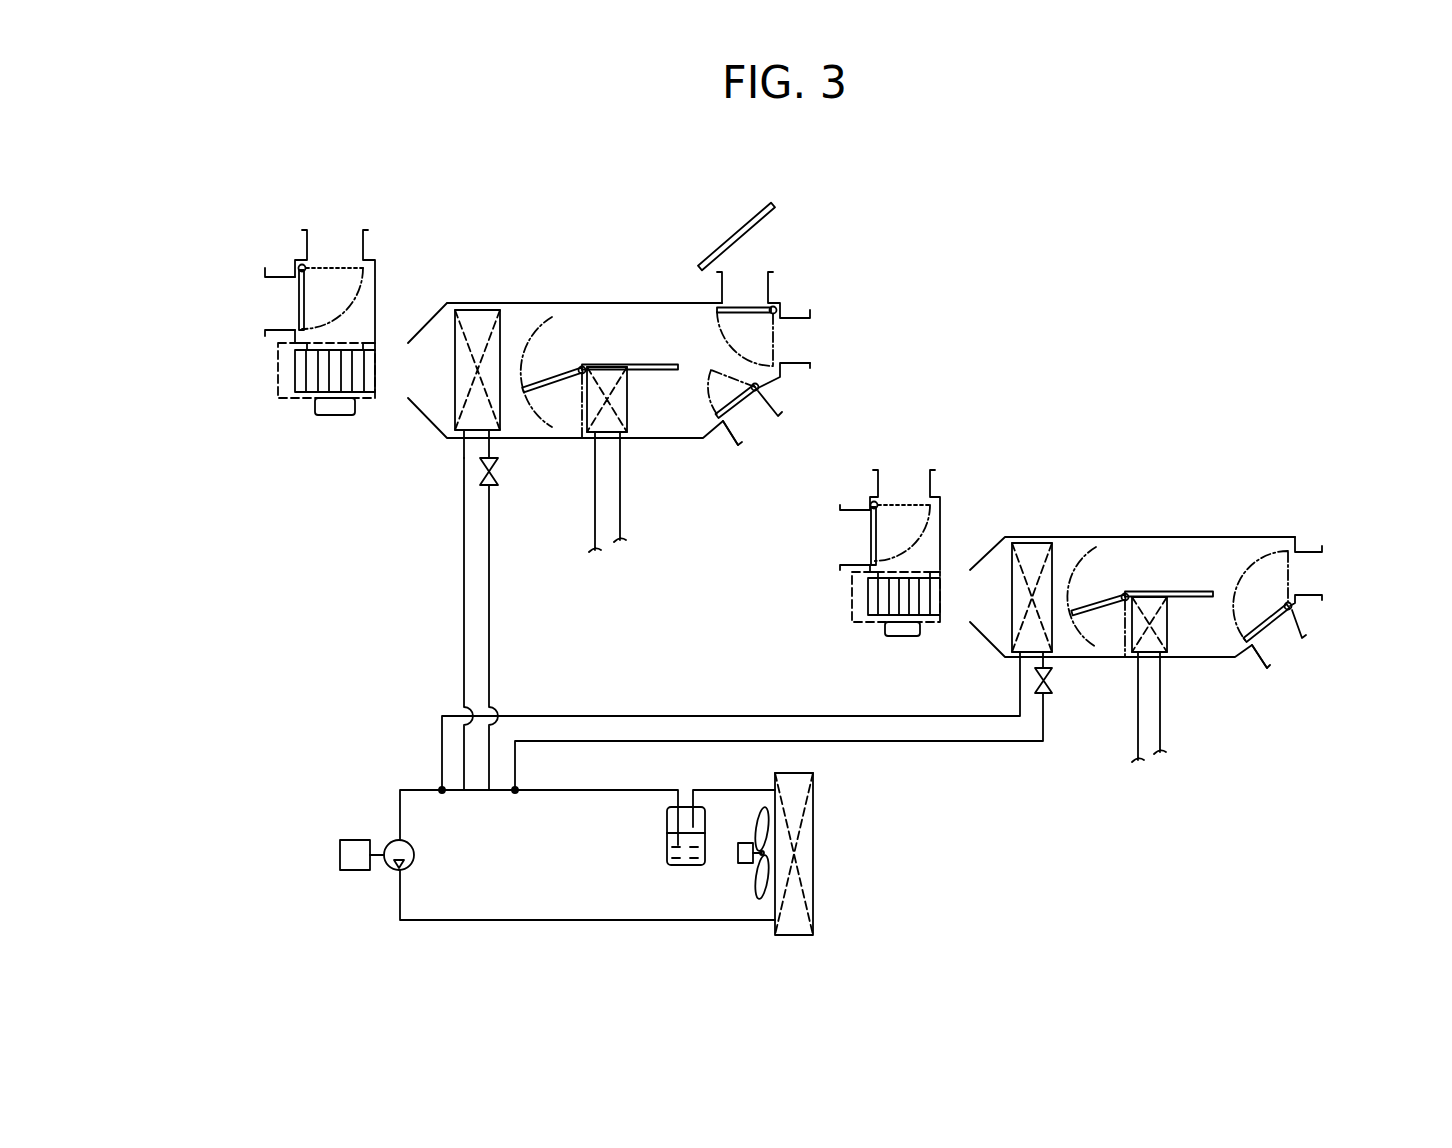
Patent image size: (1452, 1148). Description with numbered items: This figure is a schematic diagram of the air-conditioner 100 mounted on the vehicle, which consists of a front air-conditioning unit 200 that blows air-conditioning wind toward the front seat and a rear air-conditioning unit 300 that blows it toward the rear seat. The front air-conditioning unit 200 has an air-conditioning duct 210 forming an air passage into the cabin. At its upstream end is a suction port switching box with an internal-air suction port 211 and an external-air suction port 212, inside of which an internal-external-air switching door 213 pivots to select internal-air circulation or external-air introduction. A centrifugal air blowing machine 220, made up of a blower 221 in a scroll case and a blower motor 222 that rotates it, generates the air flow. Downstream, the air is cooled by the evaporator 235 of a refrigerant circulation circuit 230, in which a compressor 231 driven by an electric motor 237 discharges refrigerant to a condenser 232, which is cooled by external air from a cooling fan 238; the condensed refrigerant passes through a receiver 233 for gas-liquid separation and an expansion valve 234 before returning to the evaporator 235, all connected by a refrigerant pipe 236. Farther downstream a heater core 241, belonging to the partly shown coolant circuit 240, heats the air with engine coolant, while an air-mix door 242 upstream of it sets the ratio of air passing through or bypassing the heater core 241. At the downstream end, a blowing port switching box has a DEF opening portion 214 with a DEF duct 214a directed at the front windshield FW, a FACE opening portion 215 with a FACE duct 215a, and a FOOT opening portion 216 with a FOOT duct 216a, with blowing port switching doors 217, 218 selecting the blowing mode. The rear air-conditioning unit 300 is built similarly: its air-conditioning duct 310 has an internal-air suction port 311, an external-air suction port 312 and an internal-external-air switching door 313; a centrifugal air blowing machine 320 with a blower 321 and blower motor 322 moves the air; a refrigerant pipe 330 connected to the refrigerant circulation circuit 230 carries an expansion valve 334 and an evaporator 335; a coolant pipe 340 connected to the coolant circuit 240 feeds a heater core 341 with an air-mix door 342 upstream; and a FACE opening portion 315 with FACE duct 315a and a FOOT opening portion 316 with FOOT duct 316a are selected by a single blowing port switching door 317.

The air-conditioner 100 is at (271, 194).
The front air-conditioning unit 200 is at (552, 272).
The air-conditioning duct 210 is at (592, 302).
The internal-air suction port 211 is at (273, 298).
The external-air suction port 212 is at (333, 243).
The internal-external-air switching door 213 is at (298, 311).
The DEF opening portion 214 is at (742, 288).
The DEF duct 214a is at (718, 285).
The FACE opening portion 215 is at (795, 338).
The FACE duct 215a is at (797, 313).
The FOOT opening portion 216 is at (752, 421).
The FOOT duct 216a is at (772, 405).
The blowing port switching door 217 is at (722, 318).
The blowing port switching door 218 is at (712, 388).
The centrifugal air blowing machine 220 is at (297, 421).
The blower 221 is at (295, 373).
The blower motor 222 is at (335, 412).
The refrigerant circulation circuit 230 is at (650, 785).
The compressor 231 is at (415, 853).
The condenser 232 is at (816, 855).
The receiver 233 is at (666, 842).
The expansion valve 234 is at (498, 480).
The evaporator 235 is at (477, 310).
The refrigerant pipe 236 is at (490, 597).
The electric motor 237 is at (340, 858).
The cooling fan 238 is at (756, 890).
The coolant circuit 240 is at (622, 508).
The heater core 241 is at (648, 434).
The air-mix door 242 is at (556, 434).
The front windshield FW is at (730, 229).
The rear air-conditioning unit 300 is at (1114, 504).
The air-conditioning duct 310 is at (1165, 535).
The internal-air suction port 311 is at (848, 532).
The external-air suction port 312 is at (900, 480).
The internal-external-air switching door 313 is at (867, 540).
The FACE opening portion 315 is at (1312, 572).
The FACE duct 315a is at (1308, 546).
The FOOT opening portion 316 is at (1278, 645).
The FOOT duct 316a is at (1294, 624).
The blowing port switching door 317 is at (1247, 635).
The centrifugal air blowing machine 320 is at (862, 646).
The blower 321 is at (866, 597).
The blower motor 322 is at (902, 633).
The refrigerant pipe 330 is at (975, 745).
The expansion valve 334 is at (1051, 688).
The evaporator 335 is at (1030, 541).
The coolant pipe 340 is at (1163, 718).
The heater core 341 is at (1170, 640).
The air-mix door 342 is at (1104, 645).